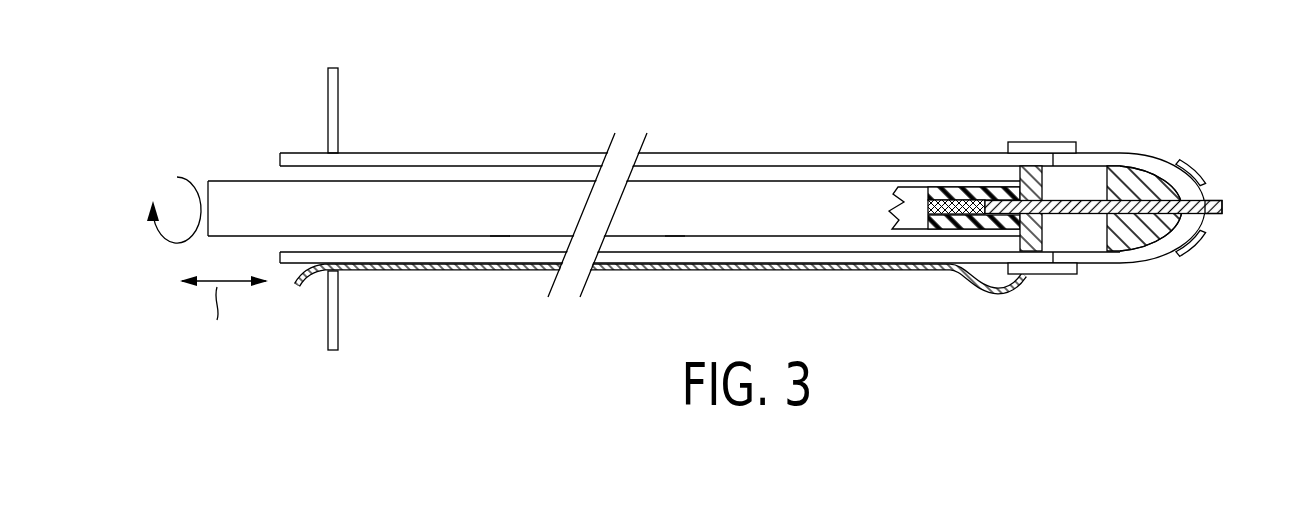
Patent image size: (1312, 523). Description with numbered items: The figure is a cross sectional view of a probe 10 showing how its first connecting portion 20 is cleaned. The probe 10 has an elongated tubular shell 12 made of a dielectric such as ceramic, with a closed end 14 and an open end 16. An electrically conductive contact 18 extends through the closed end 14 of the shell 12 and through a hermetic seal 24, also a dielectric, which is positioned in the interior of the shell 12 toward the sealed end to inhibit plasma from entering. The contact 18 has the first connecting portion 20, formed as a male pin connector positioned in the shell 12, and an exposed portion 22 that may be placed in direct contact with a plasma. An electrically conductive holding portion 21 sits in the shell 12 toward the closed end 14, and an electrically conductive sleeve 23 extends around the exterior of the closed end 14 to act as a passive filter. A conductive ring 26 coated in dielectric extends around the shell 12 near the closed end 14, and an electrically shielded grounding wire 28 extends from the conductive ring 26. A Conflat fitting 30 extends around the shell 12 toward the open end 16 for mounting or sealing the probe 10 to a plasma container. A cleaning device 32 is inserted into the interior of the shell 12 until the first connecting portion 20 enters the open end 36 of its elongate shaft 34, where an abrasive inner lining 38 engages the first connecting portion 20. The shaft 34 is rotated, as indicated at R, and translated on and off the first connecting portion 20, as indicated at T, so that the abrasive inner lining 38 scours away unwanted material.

The probe 10 is at (718, 203).
The elongated tubular shell 12 is at (437, 153).
The closed end 14 is at (1204, 221).
The open end 16 is at (280, 157).
The electrically conductive contact 18 is at (1188, 187).
The first connecting portion 20 is at (1003, 200).
The holding portion 21 is at (1152, 186).
The exposed portion 22 is at (1224, 210).
The electrically conductive sleeve 23 is at (1197, 246).
The hermetic seal 24 is at (1030, 167).
The conductive ring 26 is at (1045, 275).
The grounding wire 28 is at (880, 271).
The Conflat fitting 30 is at (339, 327).
The cleaning device 32 is at (500, 238).
The elongate shaft 34 is at (676, 238).
The open end 36 is at (957, 187).
The abrasive inner lining 38 is at (938, 199).